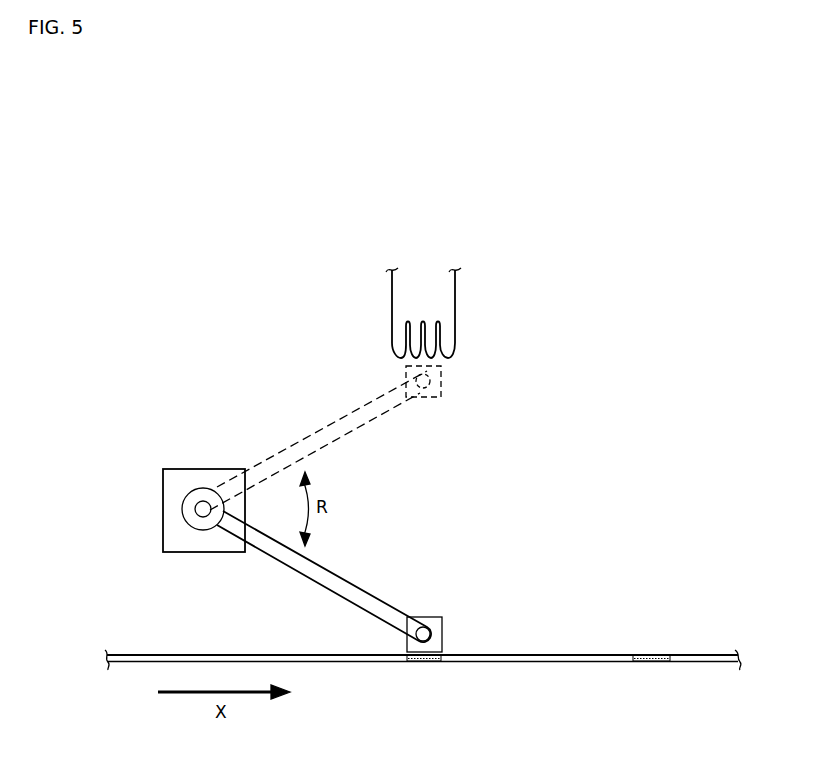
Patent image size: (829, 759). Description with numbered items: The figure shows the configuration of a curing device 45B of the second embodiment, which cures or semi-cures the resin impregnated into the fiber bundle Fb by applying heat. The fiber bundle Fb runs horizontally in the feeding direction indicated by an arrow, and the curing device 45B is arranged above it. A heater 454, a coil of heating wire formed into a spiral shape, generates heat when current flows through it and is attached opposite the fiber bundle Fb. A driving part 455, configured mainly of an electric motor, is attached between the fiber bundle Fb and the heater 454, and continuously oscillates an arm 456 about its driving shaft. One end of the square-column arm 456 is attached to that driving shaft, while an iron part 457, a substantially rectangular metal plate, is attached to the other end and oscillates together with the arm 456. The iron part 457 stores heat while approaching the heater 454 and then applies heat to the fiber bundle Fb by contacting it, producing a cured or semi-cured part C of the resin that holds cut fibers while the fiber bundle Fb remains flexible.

The curing device 45B is at (213, 401).
The heater 454 is at (456, 332).
The driving part 455 is at (163, 511).
The arm 456 is at (357, 585).
The iron part 457 is at (437, 661).
The fiber bundle Fb is at (221, 654).
The cured or semi-cured part C is at (433, 662).